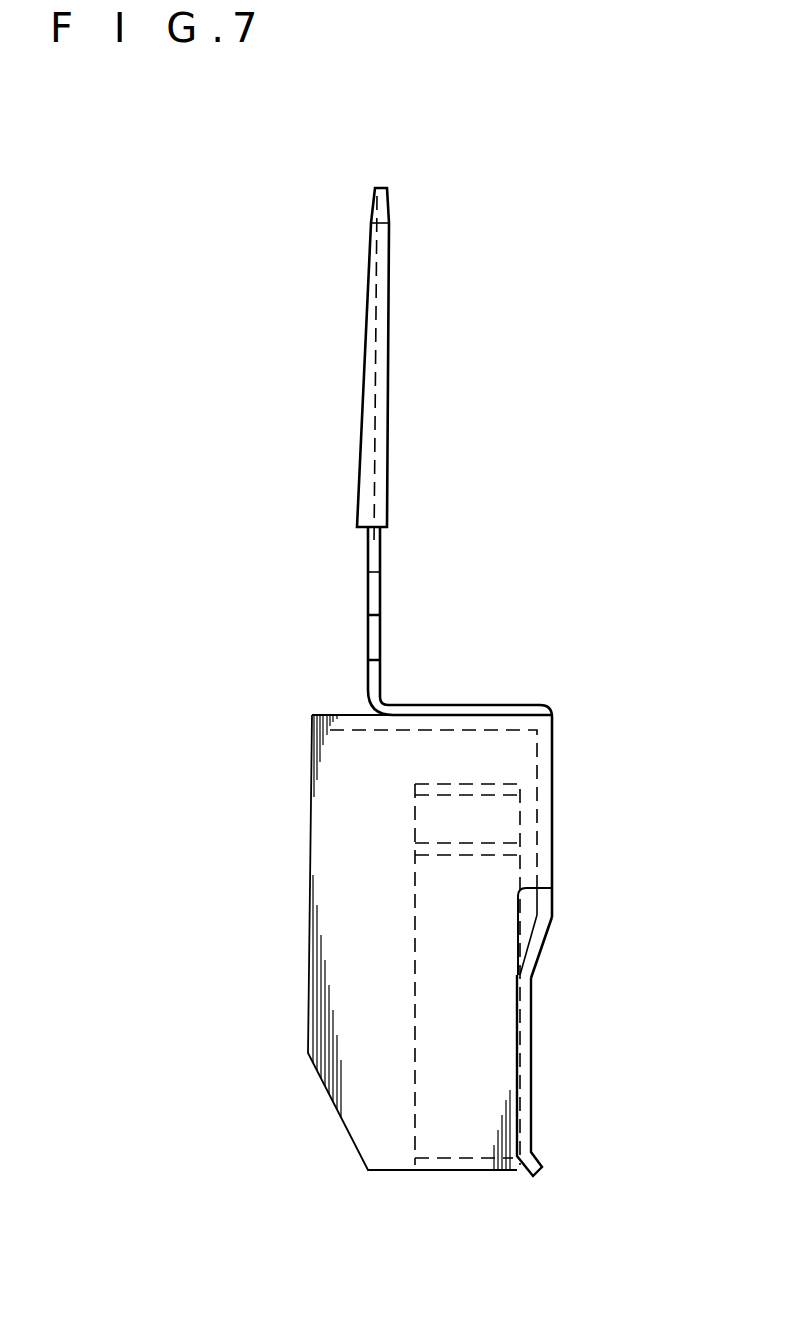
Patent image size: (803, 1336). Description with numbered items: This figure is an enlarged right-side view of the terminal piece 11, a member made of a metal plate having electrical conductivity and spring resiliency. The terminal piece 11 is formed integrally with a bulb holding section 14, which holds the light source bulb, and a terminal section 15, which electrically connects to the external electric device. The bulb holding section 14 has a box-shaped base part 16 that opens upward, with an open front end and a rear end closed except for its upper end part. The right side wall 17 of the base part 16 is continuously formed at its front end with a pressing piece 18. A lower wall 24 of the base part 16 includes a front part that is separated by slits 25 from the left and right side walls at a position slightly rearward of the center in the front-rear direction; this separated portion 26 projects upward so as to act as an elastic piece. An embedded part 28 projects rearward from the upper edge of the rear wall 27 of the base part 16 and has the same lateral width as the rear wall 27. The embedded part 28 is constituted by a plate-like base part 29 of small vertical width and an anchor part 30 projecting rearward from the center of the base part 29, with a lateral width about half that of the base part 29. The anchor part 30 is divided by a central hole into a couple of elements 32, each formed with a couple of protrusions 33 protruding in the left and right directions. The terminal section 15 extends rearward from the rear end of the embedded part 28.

The terminal piece 11 is at (358, 440).
The bulb holding section 14 is at (318, 853).
The terminal section 15 is at (390, 310).
The base part 16 is at (525, 762).
The right side wall 17 is at (345, 1003).
The pressing piece 18 is at (412, 806).
The lower wall 24 is at (552, 900).
The slits 25 is at (520, 912).
The separated portion 26 is at (533, 1025).
The rear wall 27 is at (437, 710).
The embedded part 28 is at (368, 660).
The base part 29 is at (366, 687).
The anchor part 30 is at (368, 575).
The divided elements 32 is at (383, 543).
The protrusions 33 is at (382, 585).